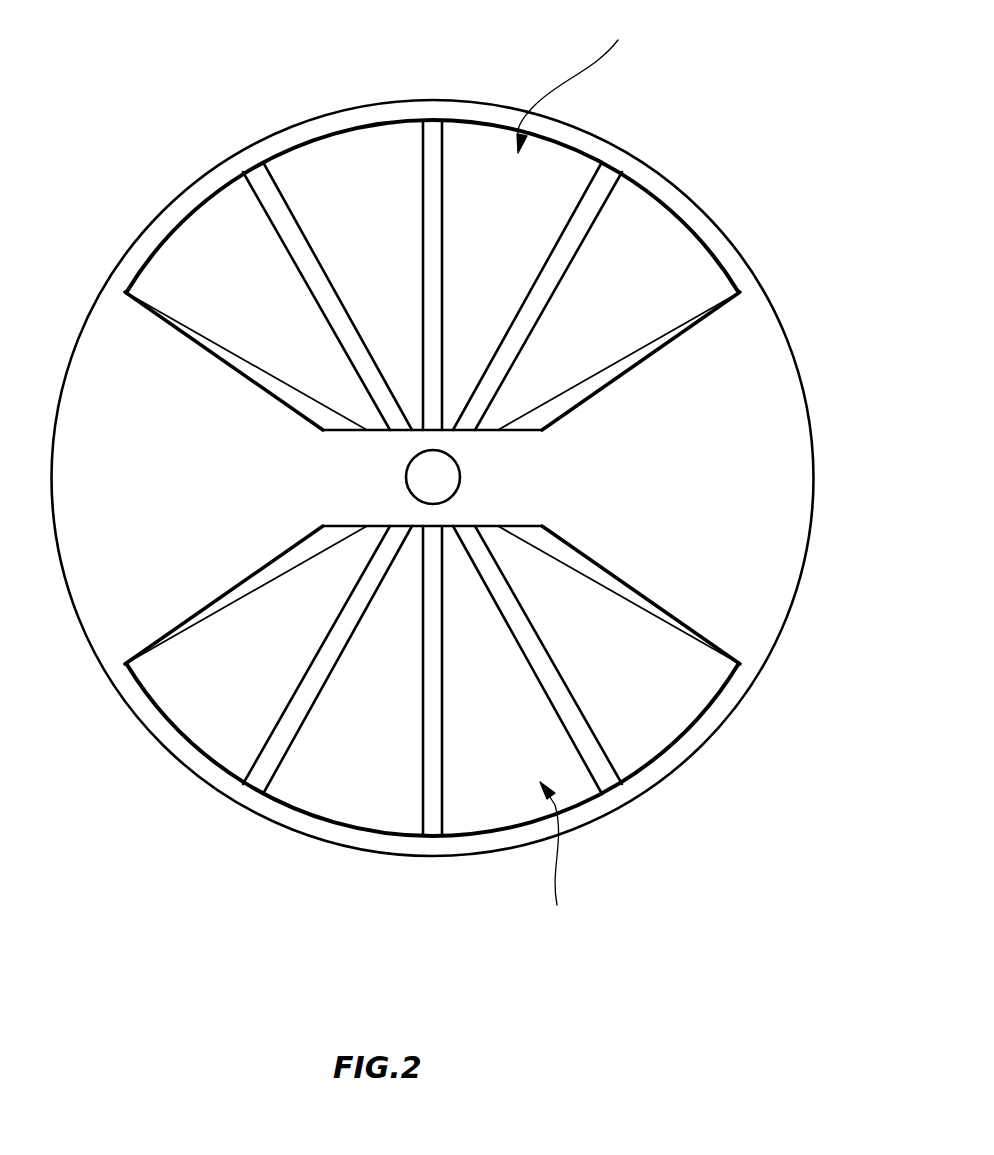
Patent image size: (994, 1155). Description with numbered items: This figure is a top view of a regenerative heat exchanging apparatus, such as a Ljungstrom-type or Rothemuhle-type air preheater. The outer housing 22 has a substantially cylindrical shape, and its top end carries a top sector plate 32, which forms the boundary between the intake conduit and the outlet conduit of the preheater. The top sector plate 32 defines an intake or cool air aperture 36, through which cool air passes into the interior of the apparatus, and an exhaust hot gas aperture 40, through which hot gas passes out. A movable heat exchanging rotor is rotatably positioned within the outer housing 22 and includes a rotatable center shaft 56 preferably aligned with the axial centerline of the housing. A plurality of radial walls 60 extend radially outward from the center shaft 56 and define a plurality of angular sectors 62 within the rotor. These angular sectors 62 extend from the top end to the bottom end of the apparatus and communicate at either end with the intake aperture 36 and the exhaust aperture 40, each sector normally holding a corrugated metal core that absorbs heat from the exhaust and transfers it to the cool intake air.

The outer housing 22 is at (580, 138).
The top sector plate 32 is at (777, 475).
The intake or cool air aperture 36 is at (581, 77).
The exhaust hot gas aperture 40 is at (564, 862).
The rotatable center shaft 56 is at (437, 483).
The radial walls 60 is at (187, 320).
The angular sectors 62 is at (380, 230).